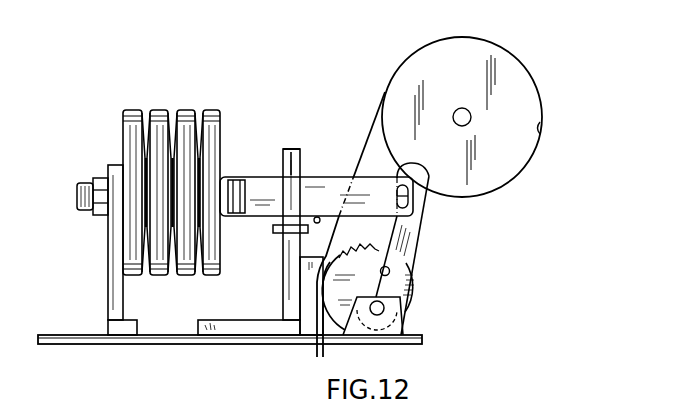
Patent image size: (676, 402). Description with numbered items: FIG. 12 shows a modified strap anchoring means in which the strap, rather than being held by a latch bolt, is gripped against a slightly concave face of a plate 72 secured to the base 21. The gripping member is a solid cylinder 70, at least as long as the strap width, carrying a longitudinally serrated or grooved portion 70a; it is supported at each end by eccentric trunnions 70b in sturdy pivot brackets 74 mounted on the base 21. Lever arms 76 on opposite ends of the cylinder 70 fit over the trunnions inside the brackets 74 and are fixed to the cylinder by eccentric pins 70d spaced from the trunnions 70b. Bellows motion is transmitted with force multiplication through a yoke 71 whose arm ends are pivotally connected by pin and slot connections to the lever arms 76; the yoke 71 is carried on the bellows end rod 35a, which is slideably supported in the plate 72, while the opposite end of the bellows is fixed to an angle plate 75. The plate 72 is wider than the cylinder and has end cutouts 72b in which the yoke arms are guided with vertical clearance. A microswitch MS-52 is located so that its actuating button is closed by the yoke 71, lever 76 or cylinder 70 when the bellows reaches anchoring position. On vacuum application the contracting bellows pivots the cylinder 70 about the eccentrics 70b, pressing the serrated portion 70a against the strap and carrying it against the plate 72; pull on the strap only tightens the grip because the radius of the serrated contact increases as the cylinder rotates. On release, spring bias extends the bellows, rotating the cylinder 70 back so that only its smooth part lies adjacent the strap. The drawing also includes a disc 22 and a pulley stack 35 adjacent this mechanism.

The base 21 is at (158, 343).
The disc 22 is at (538, 131).
The pulley stack 35 is at (217, 116).
The bellows end rod 35a is at (253, 176).
The solid cylinder 70 is at (411, 297).
The longitudinally serrated or grooved portion 70a is at (339, 255).
The eccentric trunnions 70b is at (385, 310).
The eccentric pins 70d is at (391, 272).
The yoke 71 is at (318, 182).
The plate 72 is at (317, 342).
The end cutouts 72b is at (304, 179).
The pivot brackets 74 is at (400, 330).
The angle plate 75 is at (110, 268).
The lever arms 76 is at (410, 231).
The microswitch MS-52 is at (276, 230).